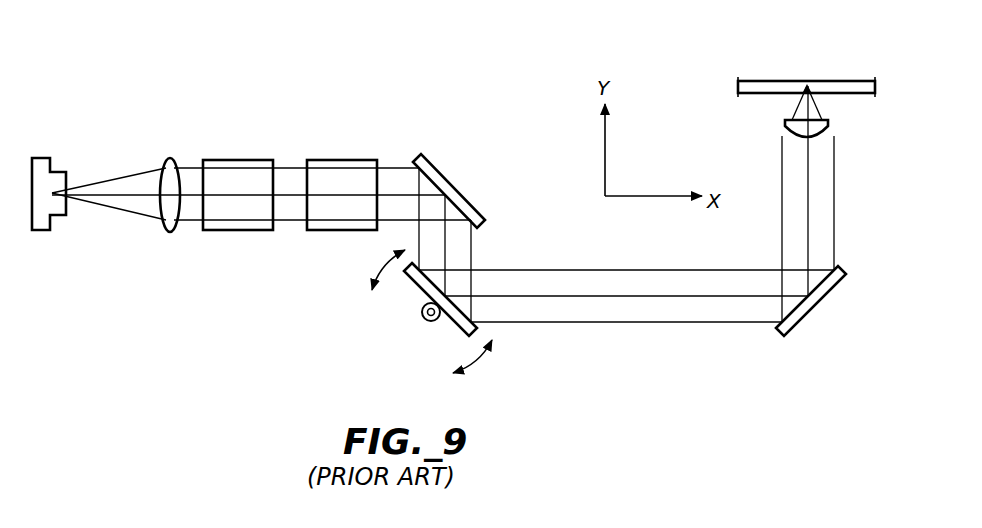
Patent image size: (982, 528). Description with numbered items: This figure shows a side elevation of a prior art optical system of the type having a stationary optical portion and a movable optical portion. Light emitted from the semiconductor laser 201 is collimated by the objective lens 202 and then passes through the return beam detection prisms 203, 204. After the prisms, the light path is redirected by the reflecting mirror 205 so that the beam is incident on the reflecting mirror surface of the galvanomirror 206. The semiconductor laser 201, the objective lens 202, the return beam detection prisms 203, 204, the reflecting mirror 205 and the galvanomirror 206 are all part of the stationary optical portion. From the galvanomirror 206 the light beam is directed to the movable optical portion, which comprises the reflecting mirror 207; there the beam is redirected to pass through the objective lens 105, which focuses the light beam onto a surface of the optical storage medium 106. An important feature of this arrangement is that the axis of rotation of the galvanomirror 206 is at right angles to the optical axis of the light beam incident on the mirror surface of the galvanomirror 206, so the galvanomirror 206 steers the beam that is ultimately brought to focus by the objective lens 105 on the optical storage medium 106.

The semiconductor laser 201 is at (40, 158).
The objective lens 202 is at (168, 160).
The return beam detection prism 203 is at (257, 157).
The return beam detection prism 204 is at (343, 157).
The reflecting mirror 205 is at (430, 158).
The galvanomirror 206 is at (418, 293).
The reflecting mirror 207 is at (823, 310).
The objective lens 105 is at (790, 127).
The optical storage medium 106 is at (838, 80).